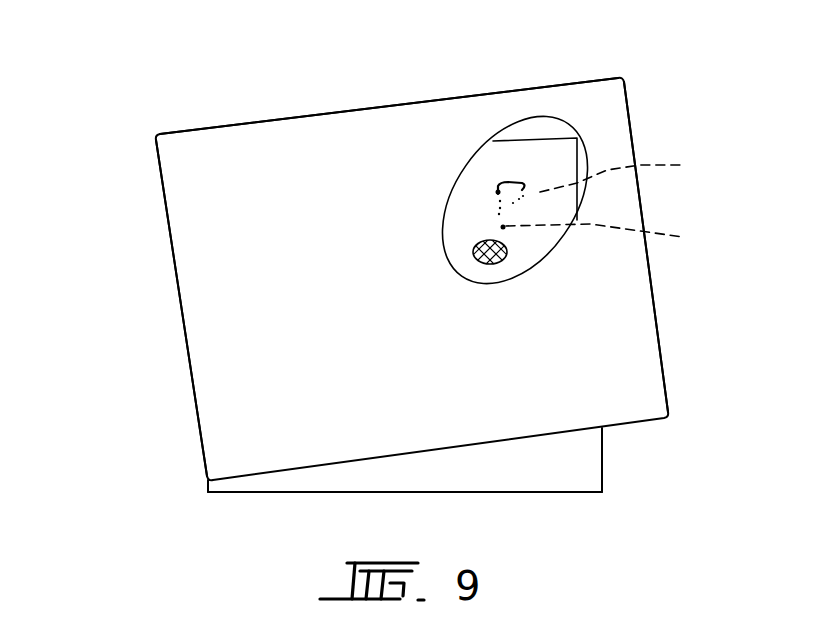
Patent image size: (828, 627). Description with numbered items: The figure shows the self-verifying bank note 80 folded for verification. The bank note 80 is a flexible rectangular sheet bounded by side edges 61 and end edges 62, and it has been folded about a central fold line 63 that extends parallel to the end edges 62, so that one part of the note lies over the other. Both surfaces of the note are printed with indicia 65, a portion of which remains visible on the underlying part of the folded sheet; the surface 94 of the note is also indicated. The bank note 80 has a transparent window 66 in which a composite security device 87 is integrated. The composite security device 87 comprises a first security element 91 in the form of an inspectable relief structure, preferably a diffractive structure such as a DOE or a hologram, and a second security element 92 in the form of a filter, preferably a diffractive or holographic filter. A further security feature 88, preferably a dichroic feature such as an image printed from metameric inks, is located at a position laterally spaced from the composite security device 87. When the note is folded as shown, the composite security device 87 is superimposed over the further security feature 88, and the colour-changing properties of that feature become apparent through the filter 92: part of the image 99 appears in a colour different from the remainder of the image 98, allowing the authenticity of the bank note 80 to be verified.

The self-verifying bank note 80 is at (143, 162).
The top surface of card 94 is at (237, 148).
The side edges 61 is at (357, 112).
The central fold line 63 is at (172, 248).
The end edges 62 is at (663, 357).
The transparent window 66 is at (548, 255).
The second security element 92 is at (546, 133).
The further security feature 88 is at (517, 176).
The part of the image 99 is at (638, 168).
The remainder of the image 98 is at (624, 227).
The first security element 91 is at (473, 262).
The composite security device 87 is at (447, 248).
The indicia 65 is at (560, 452).